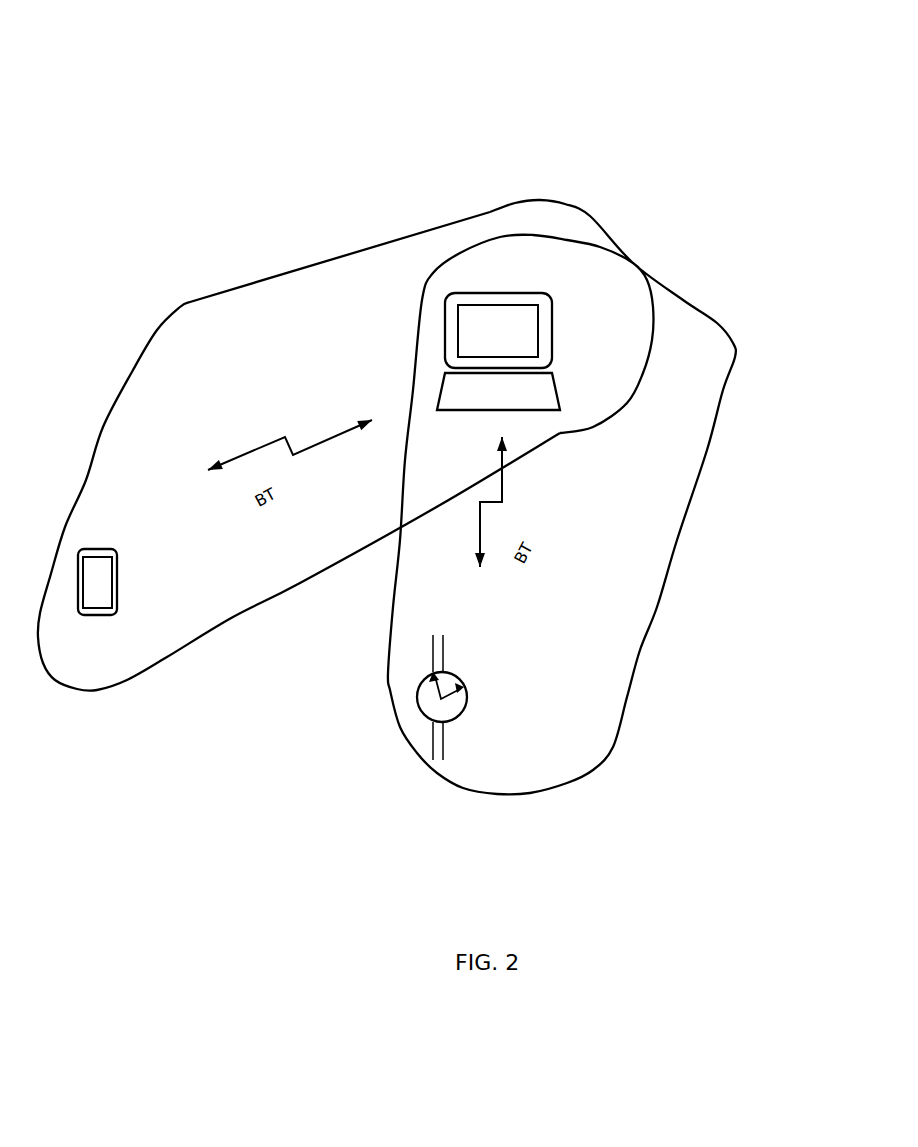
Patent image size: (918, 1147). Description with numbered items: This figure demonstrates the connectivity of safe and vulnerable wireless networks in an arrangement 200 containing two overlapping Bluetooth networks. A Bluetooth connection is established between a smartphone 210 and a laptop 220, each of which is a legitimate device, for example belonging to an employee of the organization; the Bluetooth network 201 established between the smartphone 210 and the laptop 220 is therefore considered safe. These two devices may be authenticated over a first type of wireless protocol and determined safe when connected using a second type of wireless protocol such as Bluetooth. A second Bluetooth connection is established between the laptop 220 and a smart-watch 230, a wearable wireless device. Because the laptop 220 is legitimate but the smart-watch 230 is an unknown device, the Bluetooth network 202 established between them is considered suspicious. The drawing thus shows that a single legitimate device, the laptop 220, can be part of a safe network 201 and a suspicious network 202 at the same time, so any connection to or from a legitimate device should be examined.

The system environment 200 is at (702, 78).
The Bluetooth network 201 is at (560, 200).
The Bluetooth network 202 is at (607, 748).
The smartphone 210 is at (117, 562).
The laptop 220 is at (560, 297).
The smart-watch 230 is at (477, 670).